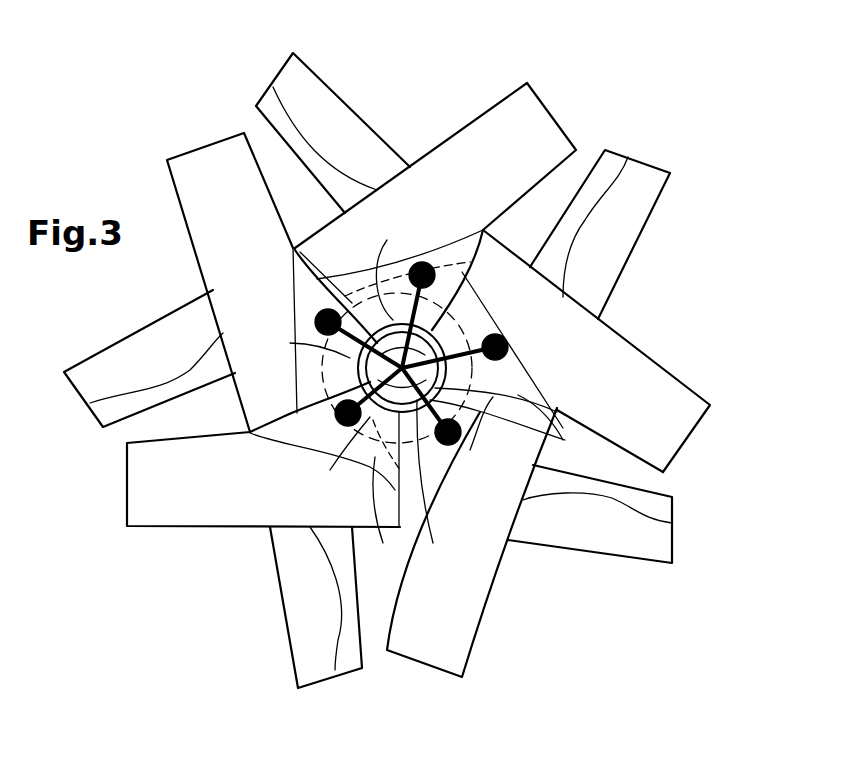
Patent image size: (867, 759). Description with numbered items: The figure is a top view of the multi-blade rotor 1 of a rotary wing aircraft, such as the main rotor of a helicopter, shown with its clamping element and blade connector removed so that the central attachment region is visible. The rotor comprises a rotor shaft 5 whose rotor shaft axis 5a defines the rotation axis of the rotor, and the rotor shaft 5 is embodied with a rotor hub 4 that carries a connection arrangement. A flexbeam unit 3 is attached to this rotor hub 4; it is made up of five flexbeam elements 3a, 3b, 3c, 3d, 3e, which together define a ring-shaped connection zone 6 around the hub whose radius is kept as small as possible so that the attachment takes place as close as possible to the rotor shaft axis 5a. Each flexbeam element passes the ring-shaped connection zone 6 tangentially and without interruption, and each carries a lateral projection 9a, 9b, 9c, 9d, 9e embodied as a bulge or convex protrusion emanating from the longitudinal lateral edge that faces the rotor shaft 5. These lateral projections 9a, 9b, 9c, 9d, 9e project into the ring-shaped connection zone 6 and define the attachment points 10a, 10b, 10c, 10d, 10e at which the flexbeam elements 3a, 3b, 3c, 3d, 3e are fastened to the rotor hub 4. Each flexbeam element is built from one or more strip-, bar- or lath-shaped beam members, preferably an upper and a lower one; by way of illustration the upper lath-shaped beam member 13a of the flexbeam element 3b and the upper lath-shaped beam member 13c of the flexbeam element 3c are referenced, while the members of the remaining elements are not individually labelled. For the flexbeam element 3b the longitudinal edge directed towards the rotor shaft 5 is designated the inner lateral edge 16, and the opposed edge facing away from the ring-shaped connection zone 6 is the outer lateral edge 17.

The multi-blade rotor 1 is at (630, 63).
The flexbeam unit 3 is at (405, 132).
The flexbeam element 3a is at (535, 130).
The flexbeam element 3b is at (308, 116).
The flexbeam element 3c is at (225, 483).
The flexbeam element 3d is at (233, 167).
The flexbeam element 3e is at (425, 630).
The rotor hub 4 is at (405, 448).
The rotor shaft 5 is at (403, 397).
The rotor shaft axis 5a is at (440, 335).
The ring-shaped connection zone 6 is at (478, 298).
The lateral projection 9a is at (407, 266).
The lateral projection 9b is at (557, 431).
The lateral projection 9c is at (367, 440).
The lateral projection 9d is at (300, 345).
The lateral projection 9e is at (379, 516).
The attachment point 10a is at (422, 255).
The attachment point 10b is at (512, 346).
The attachment point 10c is at (335, 414).
The attachment point 10d is at (310, 322).
The attachment point 10e is at (447, 450).
The upper lath-shaped beam member 13a is at (320, 108).
The upper lath-shaped beam member 13c is at (163, 512).
The inner lateral edge 16 is at (645, 478).
The outer lateral edge 17 is at (604, 375).